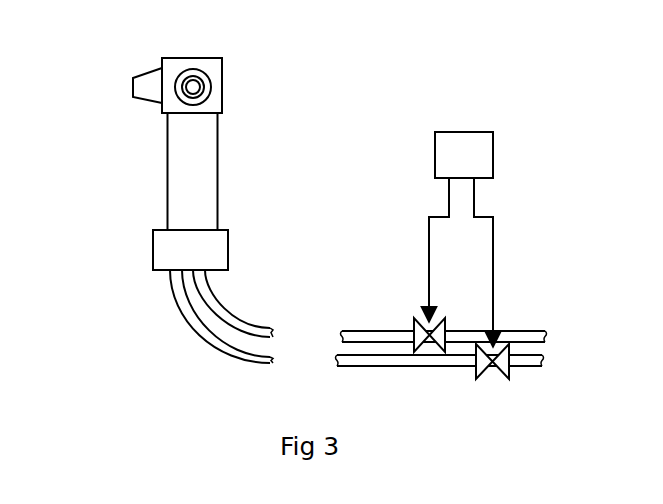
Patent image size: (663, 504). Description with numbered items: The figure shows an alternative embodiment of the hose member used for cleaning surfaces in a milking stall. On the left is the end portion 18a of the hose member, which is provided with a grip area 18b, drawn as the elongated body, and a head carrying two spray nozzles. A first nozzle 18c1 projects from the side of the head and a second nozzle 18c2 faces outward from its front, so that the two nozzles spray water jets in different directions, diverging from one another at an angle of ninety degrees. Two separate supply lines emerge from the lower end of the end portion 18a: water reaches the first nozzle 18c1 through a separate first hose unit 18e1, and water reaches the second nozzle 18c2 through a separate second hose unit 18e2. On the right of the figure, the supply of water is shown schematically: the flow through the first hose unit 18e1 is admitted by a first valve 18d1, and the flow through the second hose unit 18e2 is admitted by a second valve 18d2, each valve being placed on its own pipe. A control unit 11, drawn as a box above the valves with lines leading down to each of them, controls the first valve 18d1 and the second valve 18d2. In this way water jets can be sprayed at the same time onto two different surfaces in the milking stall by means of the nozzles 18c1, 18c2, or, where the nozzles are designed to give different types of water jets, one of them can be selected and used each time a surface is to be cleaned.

The control unit 11 is at (463, 158).
The end portion 18a is at (172, 192).
The grip area 18b is at (192, 162).
The first nozzle 18c1 is at (147, 80).
The second nozzle 18c2 is at (200, 83).
The first valve 18d1 is at (484, 368).
The second valve 18d2 is at (419, 336).
The first hose unit 18e1 is at (187, 295).
The second hose unit 18e2 is at (233, 313).